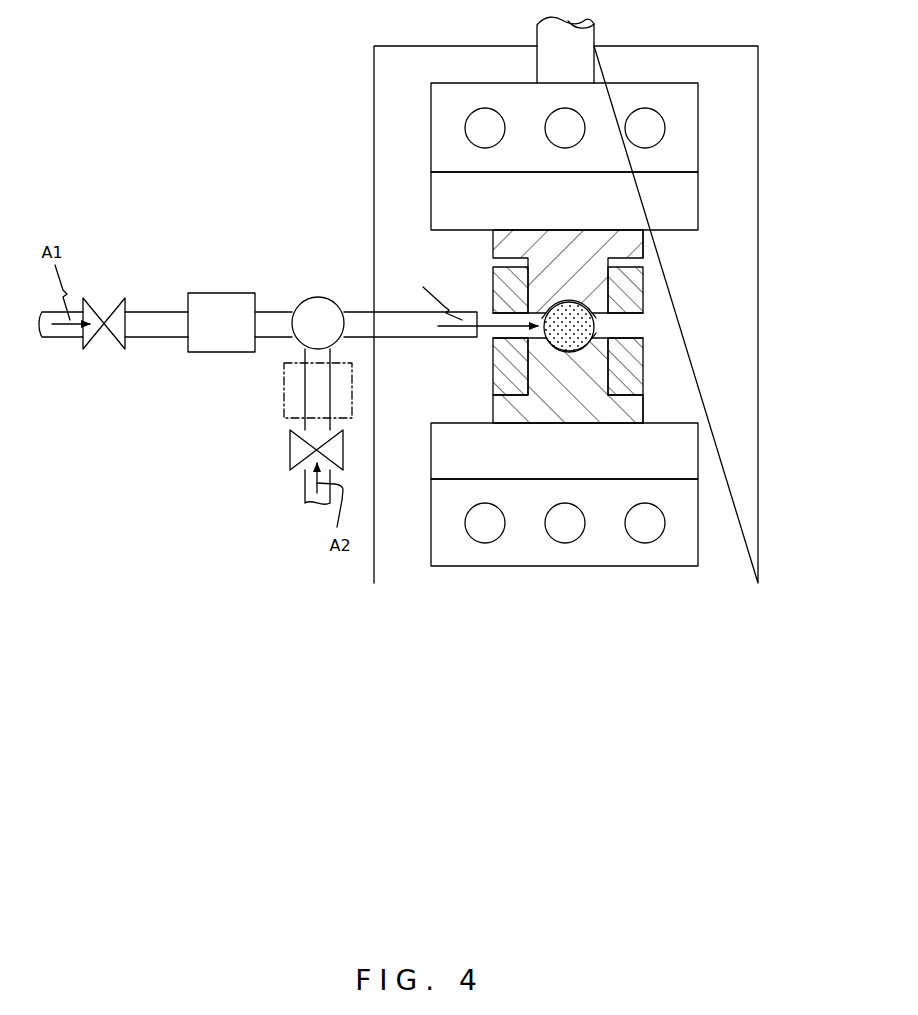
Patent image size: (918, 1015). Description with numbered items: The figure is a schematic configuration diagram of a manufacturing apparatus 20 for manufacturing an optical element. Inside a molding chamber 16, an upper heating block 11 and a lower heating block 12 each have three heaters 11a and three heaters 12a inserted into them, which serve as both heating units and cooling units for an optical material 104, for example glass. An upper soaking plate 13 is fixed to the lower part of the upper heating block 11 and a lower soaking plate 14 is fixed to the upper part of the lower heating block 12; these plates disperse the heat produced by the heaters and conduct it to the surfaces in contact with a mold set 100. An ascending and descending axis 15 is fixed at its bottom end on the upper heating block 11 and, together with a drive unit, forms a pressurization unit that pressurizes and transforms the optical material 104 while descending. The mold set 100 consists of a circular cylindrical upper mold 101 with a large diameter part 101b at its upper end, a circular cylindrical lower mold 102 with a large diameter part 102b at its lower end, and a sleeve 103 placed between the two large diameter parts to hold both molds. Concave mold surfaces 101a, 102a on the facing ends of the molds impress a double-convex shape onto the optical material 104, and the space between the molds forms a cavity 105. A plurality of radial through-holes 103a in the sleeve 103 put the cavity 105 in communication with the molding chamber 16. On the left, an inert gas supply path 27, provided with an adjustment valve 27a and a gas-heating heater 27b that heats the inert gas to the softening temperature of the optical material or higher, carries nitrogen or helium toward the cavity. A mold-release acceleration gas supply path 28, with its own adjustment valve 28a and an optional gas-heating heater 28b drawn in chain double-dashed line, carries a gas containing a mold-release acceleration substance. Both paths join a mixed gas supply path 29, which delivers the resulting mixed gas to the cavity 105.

The manufacturing apparatus 20 is at (240, 75).
The molding chamber 16 is at (374, 165).
The ascending and descending axis 15 is at (582, 50).
The upper heating block 11 is at (698, 123).
The heaters 11a is at (480, 115).
The upper soaking plate 13 is at (698, 200).
The lower heating block 12 is at (698, 525).
The heaters 12a is at (480, 533).
The lower soaking plate 14 is at (698, 453).
The mold set 100 is at (723, 320).
The upper mold 101 is at (493, 243).
The concave mold surface 101a is at (597, 312).
The large diameter part 101b is at (647, 247).
The lower mold 102 is at (493, 400).
The concave mold surface 102a is at (597, 342).
The large diameter part 102b is at (647, 405).
The sleeve 103 is at (643, 283).
The through-holes 103a is at (497, 330).
The optical material 104 is at (540, 312).
The cavity 105 is at (605, 325).
The inert gas supply path 27 is at (143, 312).
The adjustment valve 27a is at (97, 300).
The gas-heating heater 27b is at (212, 300).
The mixed gas supply path 29 is at (355, 310).
The mold-release acceleration gas supply path 28 is at (303, 477).
The adjustment valve 28a is at (295, 445).
The gas-heating heater 28b is at (285, 405).